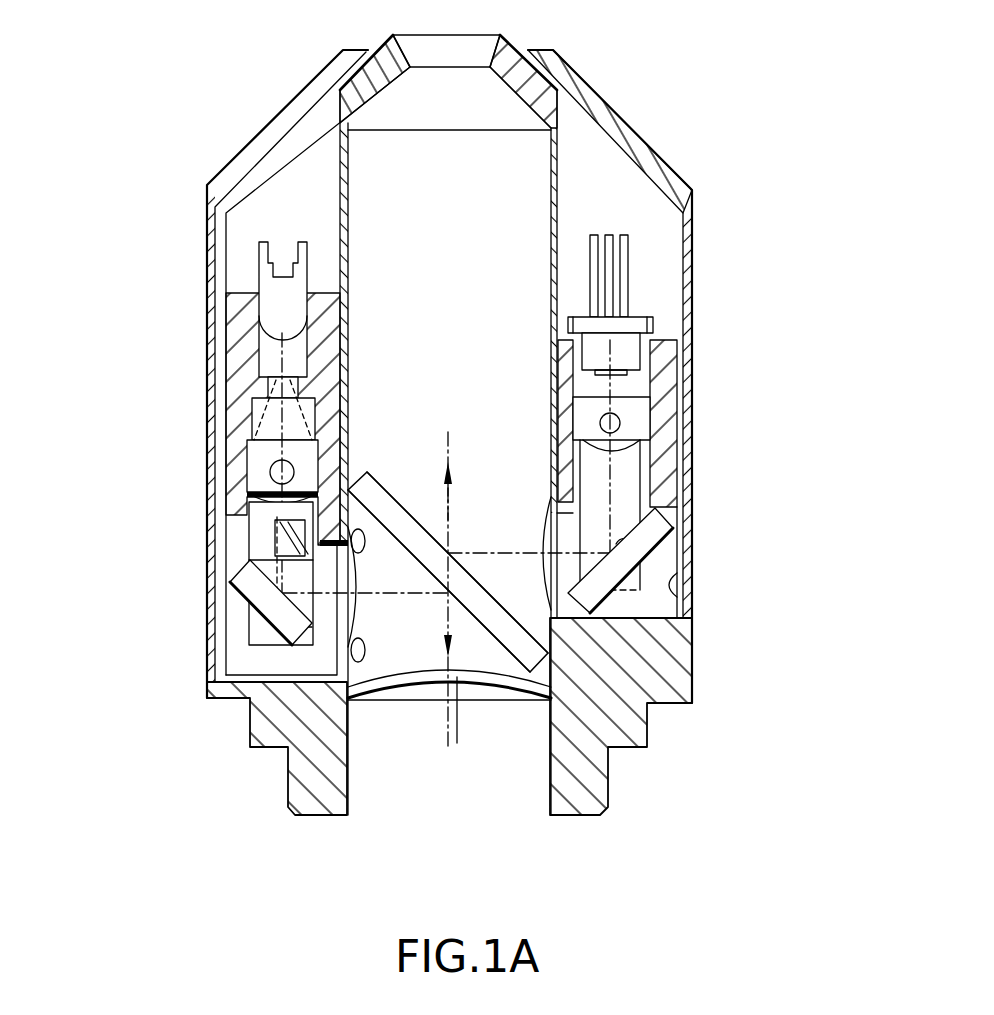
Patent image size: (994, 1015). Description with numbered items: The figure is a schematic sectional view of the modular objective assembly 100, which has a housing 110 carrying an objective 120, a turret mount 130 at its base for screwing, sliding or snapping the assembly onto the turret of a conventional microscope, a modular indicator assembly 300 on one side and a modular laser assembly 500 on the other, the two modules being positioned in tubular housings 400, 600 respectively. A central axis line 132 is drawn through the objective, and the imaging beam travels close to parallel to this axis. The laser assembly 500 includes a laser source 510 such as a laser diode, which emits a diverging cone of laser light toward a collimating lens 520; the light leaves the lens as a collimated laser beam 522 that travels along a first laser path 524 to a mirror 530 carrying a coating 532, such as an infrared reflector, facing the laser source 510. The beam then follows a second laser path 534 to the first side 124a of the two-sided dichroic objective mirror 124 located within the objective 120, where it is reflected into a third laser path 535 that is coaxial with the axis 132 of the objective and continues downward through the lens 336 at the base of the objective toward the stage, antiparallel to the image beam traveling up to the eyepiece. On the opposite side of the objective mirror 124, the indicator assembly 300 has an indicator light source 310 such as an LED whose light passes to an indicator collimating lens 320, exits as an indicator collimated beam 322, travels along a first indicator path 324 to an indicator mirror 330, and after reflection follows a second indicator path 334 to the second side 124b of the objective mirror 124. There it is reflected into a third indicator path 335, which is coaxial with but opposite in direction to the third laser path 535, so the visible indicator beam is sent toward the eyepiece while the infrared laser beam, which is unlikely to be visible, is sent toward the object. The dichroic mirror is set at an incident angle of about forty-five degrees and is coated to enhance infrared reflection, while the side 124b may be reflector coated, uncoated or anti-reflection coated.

The modular objective assembly 100 is at (770, 180).
The housing 110 is at (643, 148).
The objective 120 is at (515, 160).
The dichroic objective mirror 124 is at (527, 663).
The first side of objective mirror 124a is at (398, 503).
The second side of objective mirror 124b is at (503, 657).
The turret mount 130 is at (610, 786).
The optical axis 132 is at (448, 435).
The modular indicator assembly 300 is at (116, 226).
The indicator light source 310 is at (278, 312).
The indicator collimating lens 320 is at (267, 463).
The indicator collimated beam 322 is at (278, 567).
The first indicator path 324 is at (278, 516).
The indicator mirror 330 is at (257, 600).
The second indicator path 334 is at (383, 597).
The third indicator path 335 is at (445, 648).
The lens 336 is at (457, 743).
The tubular housing 400 is at (283, 227).
The modular laser assembly 500 is at (769, 204).
The laser source 510 is at (628, 256).
The collimating lens 520 is at (633, 415).
The collimated laser beam 522 is at (612, 492).
The first laser path 524 is at (612, 470).
The mirror 530 is at (648, 530).
The coating 532 is at (683, 566).
The second laser path 534 is at (685, 684).
The third laser path 535 is at (449, 510).
The tubular housing 600 is at (572, 160).